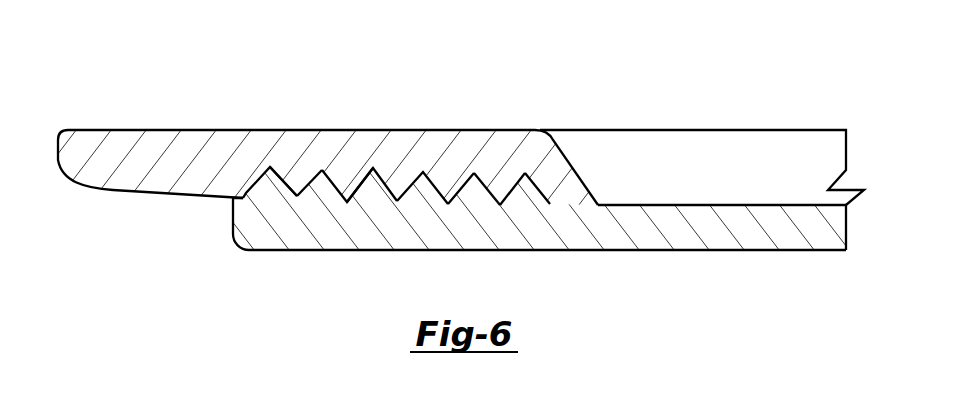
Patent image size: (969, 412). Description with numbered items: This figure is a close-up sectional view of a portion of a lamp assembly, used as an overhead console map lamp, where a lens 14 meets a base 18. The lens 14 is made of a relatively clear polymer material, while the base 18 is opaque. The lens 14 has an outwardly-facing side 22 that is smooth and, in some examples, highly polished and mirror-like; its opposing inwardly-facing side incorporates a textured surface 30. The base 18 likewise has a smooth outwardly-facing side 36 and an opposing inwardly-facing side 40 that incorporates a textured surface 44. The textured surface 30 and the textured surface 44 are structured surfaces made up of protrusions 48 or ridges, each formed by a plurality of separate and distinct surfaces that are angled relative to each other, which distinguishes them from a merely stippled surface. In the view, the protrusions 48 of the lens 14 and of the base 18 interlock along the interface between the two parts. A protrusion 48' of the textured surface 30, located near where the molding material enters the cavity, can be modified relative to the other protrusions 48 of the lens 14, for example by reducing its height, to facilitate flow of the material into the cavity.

The lens 14 is at (778, 252).
The base 18 is at (767, 165).
The outwardly-facing side of the lens 22 is at (391, 270).
The textured surface of the lens 30 is at (312, 176).
The outwardly-facing side of the base 36 is at (393, 113).
The inwardly-facing side of the base 40 is at (215, 217).
The textured surface of the base 44 is at (514, 190).
The protrusions 48 is at (446, 189).
The protrusion 48' is at (277, 141).